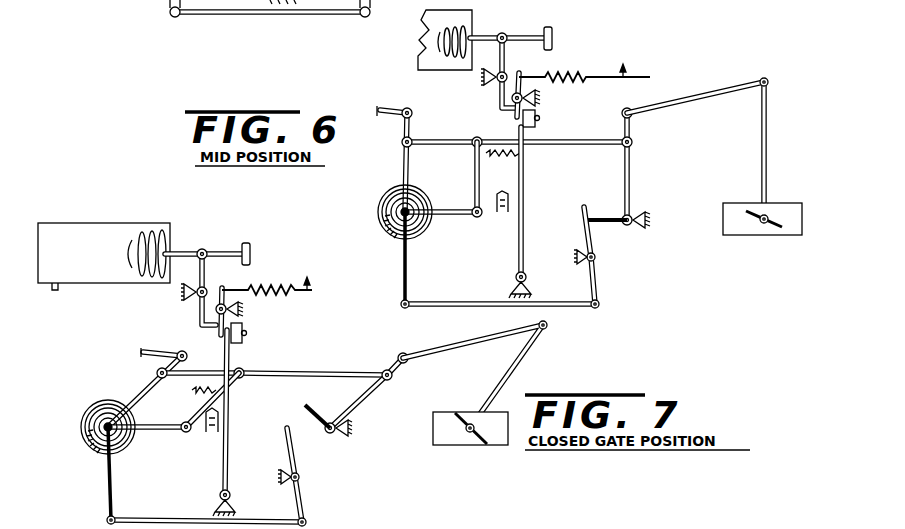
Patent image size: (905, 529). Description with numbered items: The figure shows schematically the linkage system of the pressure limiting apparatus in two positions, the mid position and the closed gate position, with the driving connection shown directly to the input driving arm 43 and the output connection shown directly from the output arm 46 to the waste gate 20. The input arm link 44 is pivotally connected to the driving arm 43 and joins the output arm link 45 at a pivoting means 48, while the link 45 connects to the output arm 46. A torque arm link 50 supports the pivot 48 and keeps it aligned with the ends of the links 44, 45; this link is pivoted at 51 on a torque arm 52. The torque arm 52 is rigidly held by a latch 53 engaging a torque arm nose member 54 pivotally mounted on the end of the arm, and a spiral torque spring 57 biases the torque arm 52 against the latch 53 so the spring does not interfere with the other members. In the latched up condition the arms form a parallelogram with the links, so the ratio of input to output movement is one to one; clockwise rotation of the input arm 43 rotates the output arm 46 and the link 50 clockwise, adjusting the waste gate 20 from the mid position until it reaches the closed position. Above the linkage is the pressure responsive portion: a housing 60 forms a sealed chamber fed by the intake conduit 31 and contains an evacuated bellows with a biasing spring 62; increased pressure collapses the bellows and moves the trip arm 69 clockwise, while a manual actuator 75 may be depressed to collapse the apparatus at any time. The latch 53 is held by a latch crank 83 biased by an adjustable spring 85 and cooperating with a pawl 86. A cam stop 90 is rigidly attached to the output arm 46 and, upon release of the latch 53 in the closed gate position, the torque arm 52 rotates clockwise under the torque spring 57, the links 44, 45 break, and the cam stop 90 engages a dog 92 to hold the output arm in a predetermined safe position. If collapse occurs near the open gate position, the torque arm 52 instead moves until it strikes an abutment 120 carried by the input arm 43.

In FIG. 6, the waste gate 20 is at (768, 205).
In FIG. 7, the waste gate 20 is at (468, 446).
In FIG. 7, the intake conduit 31 is at (57, 290).
In FIG. 6, the input driving arm 43 is at (402, 160).
In FIG. 7, the input driving arm 43 is at (142, 384).
In FIG. 6, the input arm link 44 is at (440, 138).
In FIG. 7, the input arm link 44 is at (196, 370).
In FIG. 6, the output arm link 45 is at (568, 140).
In FIG. 7, the output arm link 45 is at (294, 371).
In FIG. 6, the output arm 46 is at (632, 174).
In FIG. 7, the output arm 46 is at (368, 396).
In FIG. 6, the pivoting means 48 is at (484, 138).
In FIG. 6, the torque arm link 50 is at (476, 172).
In FIG. 7, the torque arm link 50 is at (197, 400).
In FIG. 6, the pivot 51 is at (477, 218).
In FIG. 7, the pivot 51 is at (186, 433).
In FIG. 6, the torque arm 52 is at (456, 216).
In FIG. 7, the torque arm 52 is at (154, 432).
In FIG. 6, the latch 53 is at (526, 206).
In FIG. 7, the latch 53 is at (232, 416).
In FIG. 6, the torque arm nose member 54 is at (508, 216).
In FIG. 7, the torque arm nose member 54 is at (214, 436).
In FIG. 6, the torque spring 57 is at (385, 225).
In FIG. 7, the torque spring 57 is at (88, 447).
In FIG. 7, the housing 60 is at (100, 232).
In FIG. 6, the biasing spring 62 is at (472, 32).
In FIG. 7, the biasing spring 62 is at (170, 240).
In FIG. 6, the trip arm 69 is at (508, 58).
In FIG. 7, the trip arm 69 is at (208, 274).
In FIG. 6, the manual actuator 75 is at (551, 30).
In FIG. 7, the manual actuator 75 is at (252, 248).
In FIG. 6, the latch crank 83 is at (522, 75).
In FIG. 7, the latch crank 83 is at (226, 290).
In FIG. 6, the adjustable spring 85 is at (572, 75).
In FIG. 7, the adjustable spring 85 is at (288, 285).
In FIG. 6, the pawl 86 is at (537, 115).
In FIG. 7, the pawl 86 is at (245, 334).
In FIG. 6, the cam stop 90 is at (600, 224).
In FIG. 7, the cam stop 90 is at (314, 408).
In FIG. 6, the dog 92 is at (582, 235).
In FIG. 7, the dog 92 is at (297, 452).
In FIG. 6, the abutment 120 is at (408, 240).
In FIG. 7, the abutment 120 is at (105, 450).